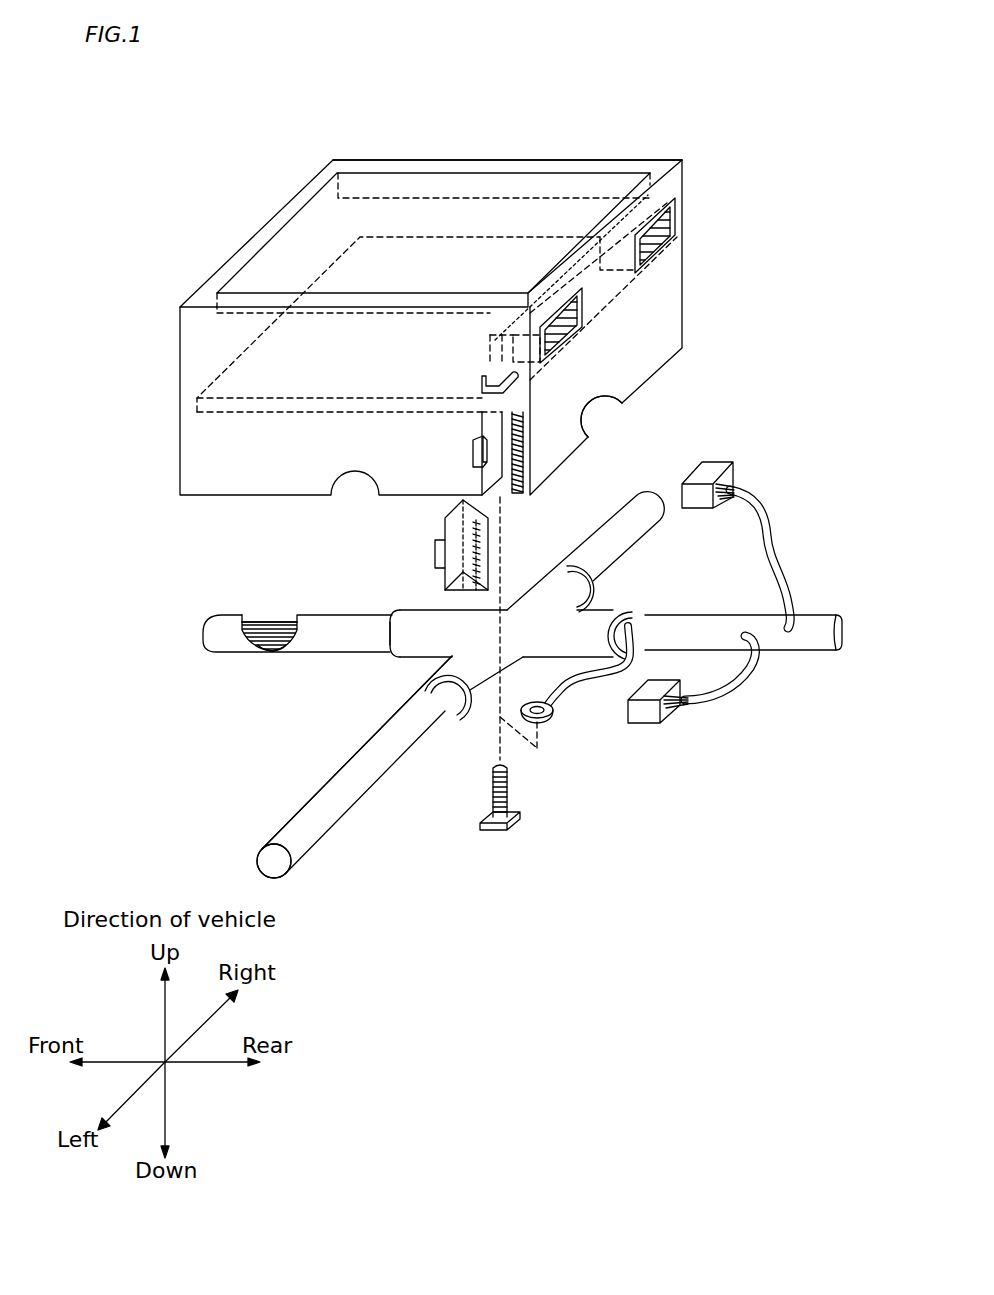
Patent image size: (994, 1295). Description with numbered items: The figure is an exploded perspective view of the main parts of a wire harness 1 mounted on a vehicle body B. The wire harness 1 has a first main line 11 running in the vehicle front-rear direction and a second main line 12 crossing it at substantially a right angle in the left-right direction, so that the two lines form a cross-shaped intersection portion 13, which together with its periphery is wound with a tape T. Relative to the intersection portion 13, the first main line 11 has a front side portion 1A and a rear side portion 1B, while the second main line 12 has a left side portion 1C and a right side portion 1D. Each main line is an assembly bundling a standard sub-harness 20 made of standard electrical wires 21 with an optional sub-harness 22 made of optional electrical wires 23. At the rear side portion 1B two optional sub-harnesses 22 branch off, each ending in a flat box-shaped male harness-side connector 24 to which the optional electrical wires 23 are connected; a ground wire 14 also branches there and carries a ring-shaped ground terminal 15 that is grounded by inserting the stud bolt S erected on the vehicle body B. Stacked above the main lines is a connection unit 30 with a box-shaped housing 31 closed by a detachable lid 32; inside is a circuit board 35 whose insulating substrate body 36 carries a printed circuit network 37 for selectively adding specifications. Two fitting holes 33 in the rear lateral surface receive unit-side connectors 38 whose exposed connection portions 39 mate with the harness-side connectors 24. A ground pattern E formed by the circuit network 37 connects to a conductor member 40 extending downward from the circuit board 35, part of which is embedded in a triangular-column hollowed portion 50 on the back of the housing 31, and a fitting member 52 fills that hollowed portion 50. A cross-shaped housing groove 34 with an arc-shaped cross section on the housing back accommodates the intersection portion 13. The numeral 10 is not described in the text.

The wire harness 1 is at (227, 170).
The connection unit 30 is at (416, 152).
The housing 31 is at (509, 159).
The lid 32 is at (357, 208).
The fitting hole 33 is at (673, 218).
The housing groove 34 is at (592, 420).
The circuit board 35 is at (273, 361).
The substrate body 36 is at (242, 368).
The circuit network 37 is at (217, 388).
The unit-side connector 38 is at (657, 252).
The connection portion 39 is at (665, 240).
The conductor member 40 is at (531, 464).
The hollowed portion 50 is at (486, 440).
The fitting member 52 is at (452, 530).
The ground pattern E is at (500, 375).
The pipe frame 10 is at (355, 828).
The first main line 11 is at (380, 625).
The second main line 12 is at (300, 842).
The front side portion 1A is at (332, 625).
The rear side portion 1B is at (812, 623).
The left side portion 1C is at (382, 767).
The right side portion 1D is at (633, 530).
The intersection portion 13 is at (573, 610).
The ground wire 14 is at (573, 680).
The ground terminal 15 is at (540, 723).
The standard sub-harness 20 is at (253, 620).
The standard electrical wire 21 is at (278, 622).
The optional sub-harness 22 is at (271, 653).
The optional electrical wire 23 is at (276, 652).
The harness-side connector 24 is at (712, 466).
The tape T is at (447, 662).
The stud bolt S is at (507, 792).
The vehicle body B is at (690, 745).